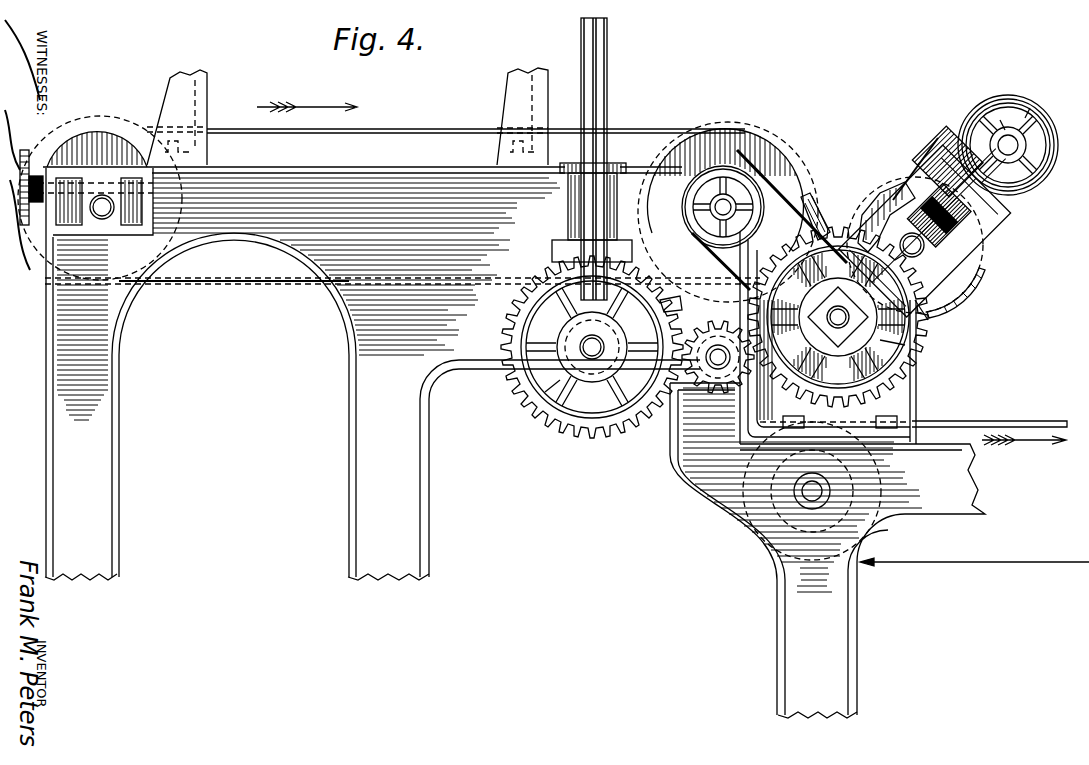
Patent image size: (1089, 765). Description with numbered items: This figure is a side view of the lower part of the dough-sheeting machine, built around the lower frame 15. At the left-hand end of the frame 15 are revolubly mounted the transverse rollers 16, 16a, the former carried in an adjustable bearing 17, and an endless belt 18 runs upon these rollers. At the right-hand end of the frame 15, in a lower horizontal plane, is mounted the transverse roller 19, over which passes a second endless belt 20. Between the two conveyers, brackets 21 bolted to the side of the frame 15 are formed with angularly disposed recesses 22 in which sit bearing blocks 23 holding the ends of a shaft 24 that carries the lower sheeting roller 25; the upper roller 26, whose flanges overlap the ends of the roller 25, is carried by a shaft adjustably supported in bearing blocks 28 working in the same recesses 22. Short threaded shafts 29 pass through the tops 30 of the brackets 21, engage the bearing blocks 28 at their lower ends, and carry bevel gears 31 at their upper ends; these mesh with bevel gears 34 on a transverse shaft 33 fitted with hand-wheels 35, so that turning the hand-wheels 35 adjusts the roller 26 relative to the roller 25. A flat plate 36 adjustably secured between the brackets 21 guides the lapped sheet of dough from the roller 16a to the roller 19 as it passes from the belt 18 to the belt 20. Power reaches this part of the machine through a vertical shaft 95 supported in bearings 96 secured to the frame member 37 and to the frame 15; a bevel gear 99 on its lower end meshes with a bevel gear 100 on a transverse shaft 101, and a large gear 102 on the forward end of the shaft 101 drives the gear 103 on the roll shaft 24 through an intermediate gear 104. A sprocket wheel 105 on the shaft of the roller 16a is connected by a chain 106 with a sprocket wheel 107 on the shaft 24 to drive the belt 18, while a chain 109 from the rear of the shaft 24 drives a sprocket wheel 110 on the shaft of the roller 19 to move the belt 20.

The lower frame 15 is at (524, 442).
The transverse roller 16 is at (86, 143).
The transverse roller 16a is at (735, 150).
The adjustable bearing 17 is at (88, 216).
The endless belt 18 is at (244, 296).
The transverse roller 19 is at (850, 463).
The endless belt 20 is at (948, 584).
The bracket 21 is at (929, 236).
The angularly disposed recess 22 is at (1025, 224).
The bearing block 23 is at (920, 316).
The shaft 24 is at (838, 317).
The roller 25 is at (935, 305).
The roller 26 is at (868, 200).
The bearing block 28 is at (950, 227).
The short shaft 29 is at (933, 160).
The top of bracket 30 is at (935, 128).
The bevel gear 31 is at (1027, 163).
The transverse shaft 33 is at (1016, 127).
The bevel gear 34 is at (1003, 120).
The hand-wheel 35 is at (1032, 108).
The flat plate 36 is at (812, 192).
The frame member 37 is at (174, 84).
The vertical shaft 95 is at (605, 48).
The bearing 96 is at (584, 217).
The bevel gear 99 is at (668, 305).
The bevel gear 100 is at (595, 375).
The transverse shaft 101 is at (545, 392).
The large gear 102 is at (582, 370).
The gear 103 is at (838, 306).
The intermediate gear 104 is at (712, 380).
The sprocket wheel 105 is at (752, 180).
The chain 106 is at (790, 202).
The sprocket wheel 107 is at (892, 343).
The chain 109 is at (880, 416).
The sprocket wheel 110 is at (774, 545).